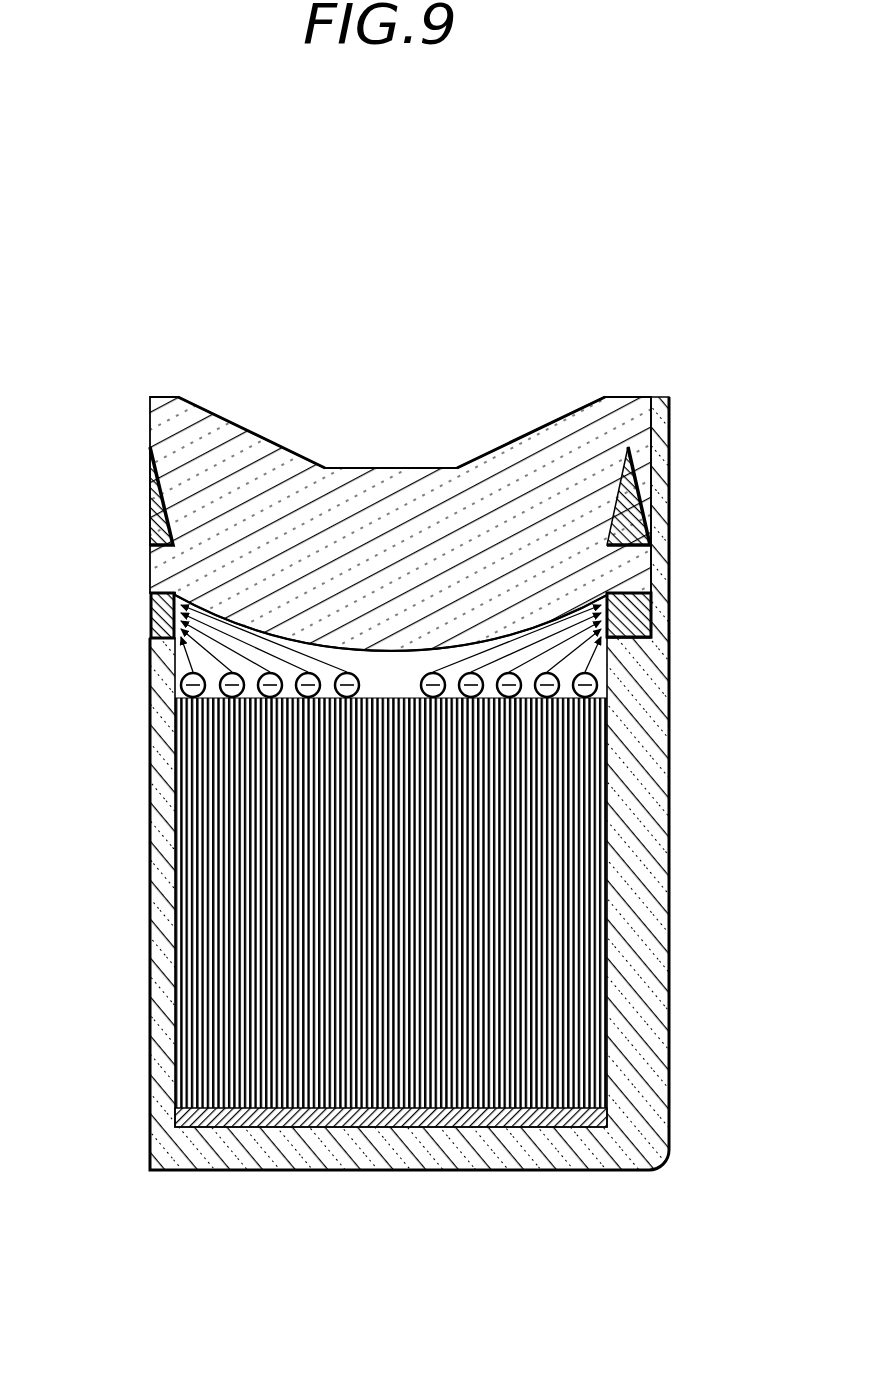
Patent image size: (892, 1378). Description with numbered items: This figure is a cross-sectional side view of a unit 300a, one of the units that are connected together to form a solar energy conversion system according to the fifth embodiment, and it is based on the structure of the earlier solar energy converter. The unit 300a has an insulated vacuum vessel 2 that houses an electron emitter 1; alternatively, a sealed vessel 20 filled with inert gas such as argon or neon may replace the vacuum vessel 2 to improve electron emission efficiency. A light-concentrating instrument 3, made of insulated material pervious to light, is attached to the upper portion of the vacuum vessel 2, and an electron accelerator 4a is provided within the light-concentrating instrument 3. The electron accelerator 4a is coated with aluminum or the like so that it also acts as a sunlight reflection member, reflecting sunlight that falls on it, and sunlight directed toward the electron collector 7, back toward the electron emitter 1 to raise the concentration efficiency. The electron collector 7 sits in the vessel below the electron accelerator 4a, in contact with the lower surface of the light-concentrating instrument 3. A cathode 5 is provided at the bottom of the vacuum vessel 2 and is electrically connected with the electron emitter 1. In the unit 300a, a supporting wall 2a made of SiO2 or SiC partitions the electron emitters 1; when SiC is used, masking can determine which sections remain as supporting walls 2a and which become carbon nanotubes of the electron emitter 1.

The unit of the solar energy converter 300a is at (425, 252).
The light-concentrating instrument 3 is at (383, 470).
The electron accelerator 4a is at (152, 497).
The electron collector 7 is at (152, 590).
The vacuum vessel 2 is at (462, 783).
The sealed vessel 20 is at (662, 857).
The supporting wall 2a is at (162, 982).
The electron emitter 1 is at (247, 1126).
The cathode 5 is at (417, 1128).